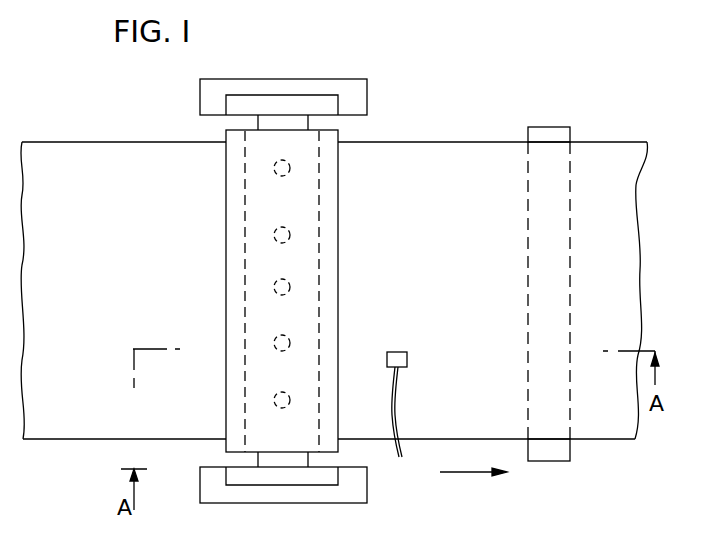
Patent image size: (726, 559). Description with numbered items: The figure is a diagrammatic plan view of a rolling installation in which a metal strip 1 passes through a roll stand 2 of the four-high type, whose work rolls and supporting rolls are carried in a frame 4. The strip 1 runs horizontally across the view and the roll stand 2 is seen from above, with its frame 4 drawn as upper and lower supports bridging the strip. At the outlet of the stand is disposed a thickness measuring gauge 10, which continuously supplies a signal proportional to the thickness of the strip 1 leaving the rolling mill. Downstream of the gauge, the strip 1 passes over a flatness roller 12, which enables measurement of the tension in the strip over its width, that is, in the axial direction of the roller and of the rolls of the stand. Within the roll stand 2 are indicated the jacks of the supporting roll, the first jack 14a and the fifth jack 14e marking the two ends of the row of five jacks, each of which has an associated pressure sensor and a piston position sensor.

The metal strip 1 is at (120, 178).
The roll stand 2 is at (345, 492).
The frame 4 is at (362, 95).
The thickness measuring gauge 10 is at (405, 360).
The flatness roller 12 is at (548, 137).
The jack 14a is at (280, 407).
The jack 14e is at (275, 167).